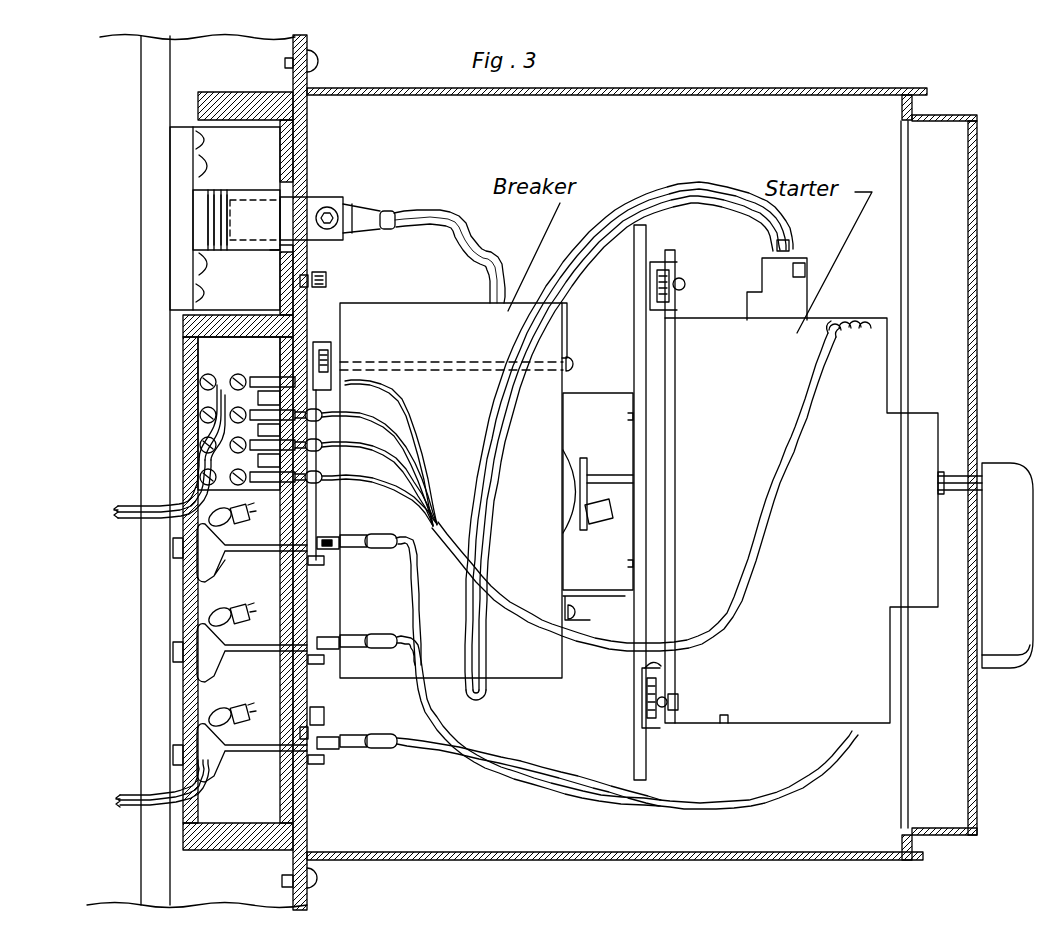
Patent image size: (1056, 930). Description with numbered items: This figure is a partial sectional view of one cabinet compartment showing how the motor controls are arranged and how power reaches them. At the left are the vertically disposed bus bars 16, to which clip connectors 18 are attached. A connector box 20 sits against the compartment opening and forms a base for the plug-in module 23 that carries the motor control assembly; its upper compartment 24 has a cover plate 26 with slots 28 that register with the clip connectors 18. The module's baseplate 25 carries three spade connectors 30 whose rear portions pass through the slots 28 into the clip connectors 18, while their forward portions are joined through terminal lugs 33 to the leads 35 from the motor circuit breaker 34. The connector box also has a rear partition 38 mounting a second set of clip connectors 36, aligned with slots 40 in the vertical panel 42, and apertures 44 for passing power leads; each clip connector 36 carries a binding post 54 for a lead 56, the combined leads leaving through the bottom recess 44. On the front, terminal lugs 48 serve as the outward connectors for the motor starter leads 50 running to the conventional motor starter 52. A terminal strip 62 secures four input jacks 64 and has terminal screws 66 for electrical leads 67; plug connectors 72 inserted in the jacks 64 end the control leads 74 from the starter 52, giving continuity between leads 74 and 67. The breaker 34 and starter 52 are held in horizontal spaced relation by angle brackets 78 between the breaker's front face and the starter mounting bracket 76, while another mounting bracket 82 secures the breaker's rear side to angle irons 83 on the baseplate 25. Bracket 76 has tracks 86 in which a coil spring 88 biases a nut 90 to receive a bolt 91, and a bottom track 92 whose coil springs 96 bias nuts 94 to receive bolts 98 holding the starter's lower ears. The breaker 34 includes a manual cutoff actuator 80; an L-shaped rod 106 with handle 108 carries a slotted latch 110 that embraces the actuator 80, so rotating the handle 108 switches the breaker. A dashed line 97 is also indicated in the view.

The bus bars 16 is at (152, 214).
The clip connectors 18 is at (230, 202).
The connector box 20 is at (326, 279).
The plug-in module 23 is at (318, 472).
The upper compartment 24 is at (220, 93).
The baseplate 25 is at (302, 182).
The cover plate 26 is at (306, 152).
The slots 28 is at (278, 250).
The spade connectors 30 is at (335, 199).
The terminal lugs 33 is at (320, 218).
The motor circuit breaker 34 is at (372, 313).
The leads 35 is at (445, 226).
The clip connectors 36 is at (257, 540).
The rear partition 38 is at (229, 582).
The slots 40 is at (308, 538).
The vertical panel 42 is at (297, 832).
The apertures 44 is at (180, 498).
The terminal lugs 48 is at (340, 560).
The motor starter leads 50 is at (383, 640).
The motor starter 52 is at (778, 703).
The binding post 54 is at (232, 535).
The lead 56 is at (125, 812).
The terminal strip 62 is at (198, 352).
The input jacks 64 is at (262, 384).
The terminal screws 66 is at (205, 386).
The electrical leads 67 is at (135, 517).
The plug connectors 72 is at (330, 468).
The control leads 74 is at (383, 436).
The starter mounting bracket 76 is at (640, 313).
The angle brackets 78 is at (590, 392).
The manual cutoff actuator 80 is at (592, 528).
The mounting bracket 82 is at (318, 340).
The angle irons 83 is at (300, 283).
The tracks 86 is at (656, 252).
The coil spring 88 is at (680, 296).
The nut 90 is at (682, 273).
The bolt 91 is at (685, 287).
The track 92 is at (646, 665).
The nuts 94 is at (677, 732).
The coil springs 96 is at (652, 705).
The pivot axis 97 is at (453, 368).
The bolts 98 is at (652, 715).
The L-shaped rod 106 is at (597, 473).
The handle 108 is at (992, 585).
The slotted latch 110 is at (572, 494).